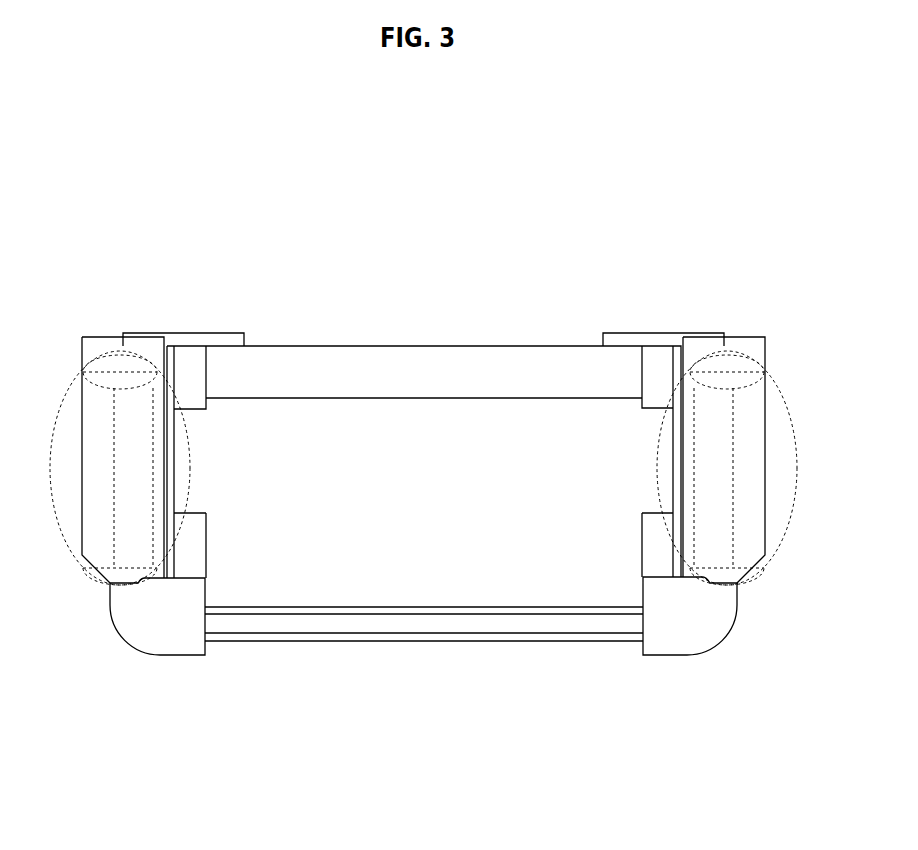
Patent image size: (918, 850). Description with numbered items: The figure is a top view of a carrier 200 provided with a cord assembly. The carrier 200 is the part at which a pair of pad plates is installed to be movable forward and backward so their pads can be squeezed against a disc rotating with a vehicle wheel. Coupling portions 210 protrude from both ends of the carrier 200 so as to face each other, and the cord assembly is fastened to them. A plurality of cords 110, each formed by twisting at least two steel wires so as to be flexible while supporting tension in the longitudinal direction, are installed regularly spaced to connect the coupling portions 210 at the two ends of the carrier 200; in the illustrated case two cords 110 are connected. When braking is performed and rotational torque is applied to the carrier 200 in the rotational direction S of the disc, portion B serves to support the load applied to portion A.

The carrier 200 is at (650, 280).
The coupling portions 210 is at (178, 647).
The cord 110 is at (337, 647).
The rotational direction S is at (213, 465).
The portion A is at (83, 570).
The portion B is at (765, 570).